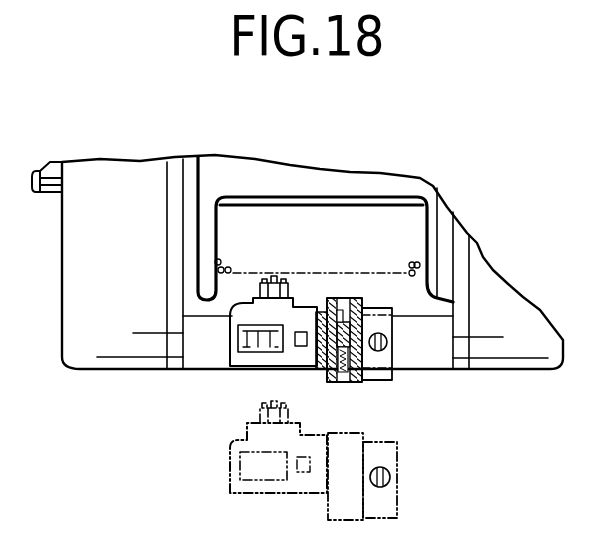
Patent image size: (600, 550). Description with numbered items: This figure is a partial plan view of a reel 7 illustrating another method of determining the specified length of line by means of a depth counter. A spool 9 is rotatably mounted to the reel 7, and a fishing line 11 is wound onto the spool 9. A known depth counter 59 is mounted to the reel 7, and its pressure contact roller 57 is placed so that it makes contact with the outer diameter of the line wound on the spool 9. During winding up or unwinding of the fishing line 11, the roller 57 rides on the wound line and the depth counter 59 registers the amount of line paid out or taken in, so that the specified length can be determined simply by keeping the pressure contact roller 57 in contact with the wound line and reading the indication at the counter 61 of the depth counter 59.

The reel 7 is at (110, 371).
The spool 9 is at (389, 181).
The fishing line 11 is at (413, 277).
The pressure contact roller 57 is at (253, 292).
The depth counter 59 is at (353, 383).
The counter 61 is at (283, 326).